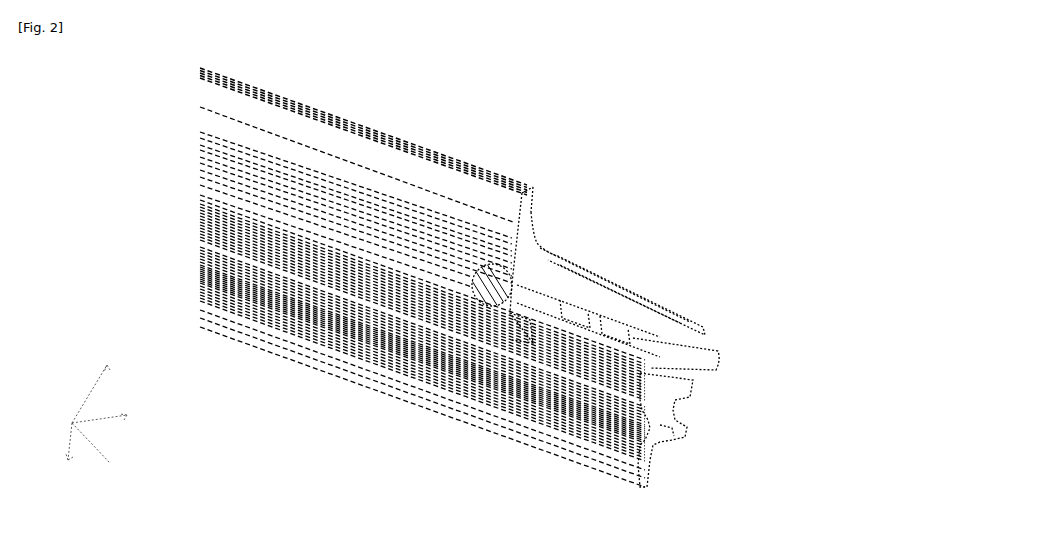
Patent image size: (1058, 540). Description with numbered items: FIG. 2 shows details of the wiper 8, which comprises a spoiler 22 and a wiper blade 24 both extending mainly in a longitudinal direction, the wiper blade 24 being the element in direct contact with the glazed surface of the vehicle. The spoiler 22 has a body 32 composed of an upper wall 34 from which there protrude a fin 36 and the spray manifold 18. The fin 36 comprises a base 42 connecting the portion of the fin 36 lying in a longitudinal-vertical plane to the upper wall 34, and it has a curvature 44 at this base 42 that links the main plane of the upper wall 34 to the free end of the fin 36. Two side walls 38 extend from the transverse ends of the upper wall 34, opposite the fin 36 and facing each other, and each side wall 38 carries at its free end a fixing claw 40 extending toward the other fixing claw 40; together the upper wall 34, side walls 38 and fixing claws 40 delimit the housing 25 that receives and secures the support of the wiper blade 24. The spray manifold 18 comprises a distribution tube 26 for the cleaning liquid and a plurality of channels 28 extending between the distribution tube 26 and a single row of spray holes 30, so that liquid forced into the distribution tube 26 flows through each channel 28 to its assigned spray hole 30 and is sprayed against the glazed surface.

The wiper 8 is at (602, 242).
The spoiler 22 is at (602, 248).
The body 32 is at (512, 255).
The fin 36 is at (535, 218).
The base 42 is at (538, 243).
The curvature 44 is at (577, 261).
The upper wall 34 is at (613, 291).
The housing 25 is at (706, 328).
The wiper blade 24 is at (683, 445).
The spray manifold 18 is at (412, 277).
The distribution tube 26 is at (420, 357).
The channels 28 is at (346, 260).
The spray holes 30 is at (356, 209).
The side walls 38 is at (390, 395).
The fixing claw 40 is at (468, 380).